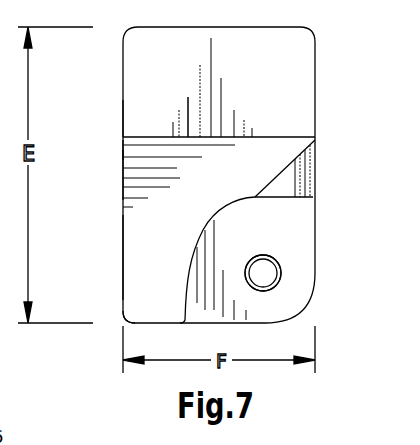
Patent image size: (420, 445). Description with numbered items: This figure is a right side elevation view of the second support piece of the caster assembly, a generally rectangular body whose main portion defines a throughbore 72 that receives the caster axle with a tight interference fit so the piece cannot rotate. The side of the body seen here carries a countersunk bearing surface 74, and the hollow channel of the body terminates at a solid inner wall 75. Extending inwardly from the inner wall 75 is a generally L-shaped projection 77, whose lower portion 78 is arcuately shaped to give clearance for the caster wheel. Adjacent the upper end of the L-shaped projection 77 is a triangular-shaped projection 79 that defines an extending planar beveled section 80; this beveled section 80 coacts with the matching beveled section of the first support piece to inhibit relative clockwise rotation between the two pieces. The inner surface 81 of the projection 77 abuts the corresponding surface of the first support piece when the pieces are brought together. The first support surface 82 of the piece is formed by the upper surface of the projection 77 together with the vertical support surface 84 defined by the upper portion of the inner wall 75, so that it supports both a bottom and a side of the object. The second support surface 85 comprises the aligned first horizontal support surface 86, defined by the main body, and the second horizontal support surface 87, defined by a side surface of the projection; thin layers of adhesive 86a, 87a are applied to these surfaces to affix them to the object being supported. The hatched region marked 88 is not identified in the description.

The throughbore 72 is at (250, 281).
The countersunk bearing surface 74 is at (258, 258).
The inner wall 75 is at (223, 40).
The L-shaped projection 77 is at (135, 182).
The lower portion of the projection 78 is at (138, 313).
The triangular-shaped projection 79 is at (296, 170).
The beveled section 80 is at (298, 156).
The inner surface of the projection 81 is at (207, 206).
The first support surface 82 is at (150, 55).
The vertical support surface 84 is at (275, 88).
The second support surface 85 is at (95, 147).
The first horizontal support surface 86 is at (108, 170).
The layer of adhesive 86a is at (123, 116).
The second horizontal support surface 87 is at (108, 276).
The layer of adhesive 87a is at (123, 235).
The hatched surface 88 is at (180, 137).